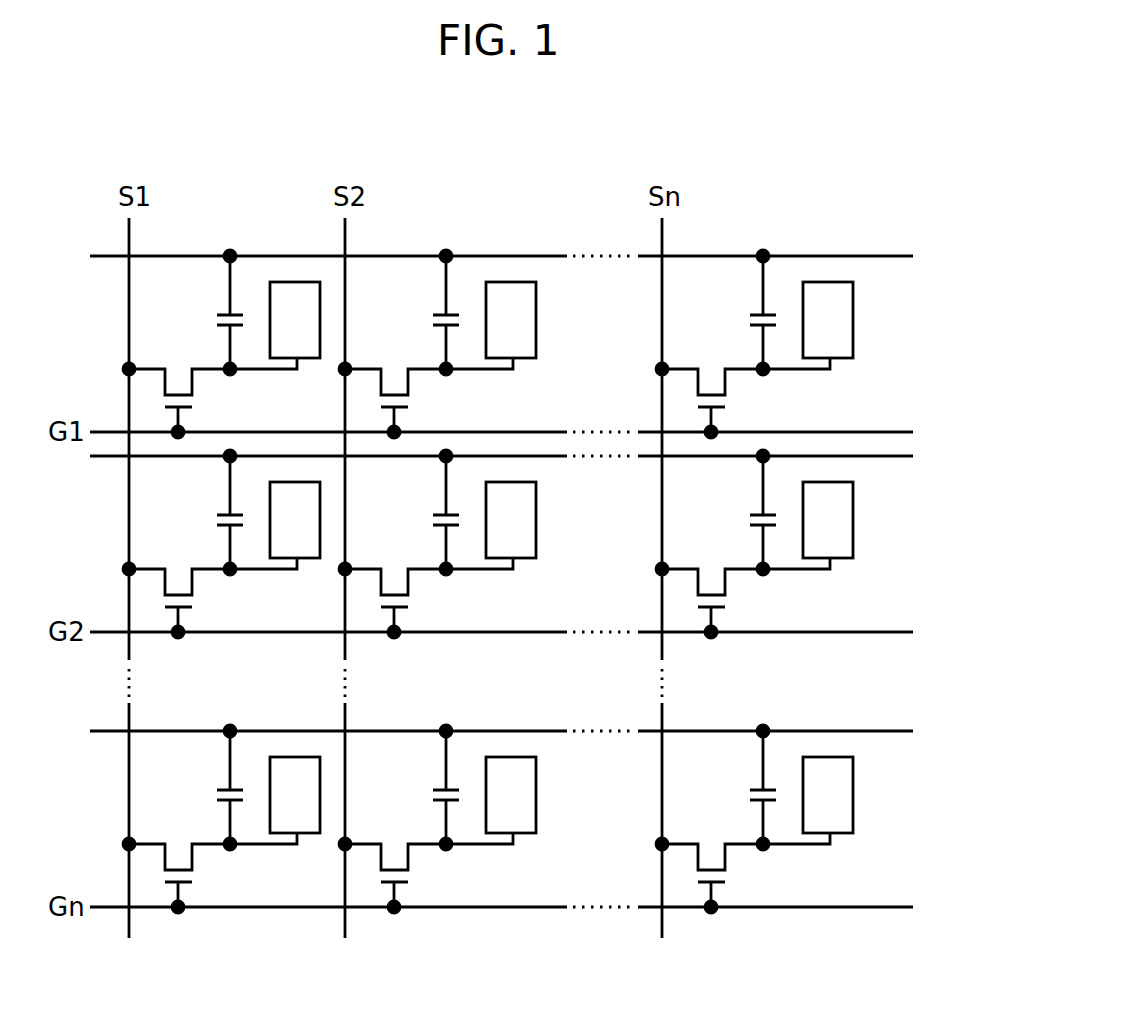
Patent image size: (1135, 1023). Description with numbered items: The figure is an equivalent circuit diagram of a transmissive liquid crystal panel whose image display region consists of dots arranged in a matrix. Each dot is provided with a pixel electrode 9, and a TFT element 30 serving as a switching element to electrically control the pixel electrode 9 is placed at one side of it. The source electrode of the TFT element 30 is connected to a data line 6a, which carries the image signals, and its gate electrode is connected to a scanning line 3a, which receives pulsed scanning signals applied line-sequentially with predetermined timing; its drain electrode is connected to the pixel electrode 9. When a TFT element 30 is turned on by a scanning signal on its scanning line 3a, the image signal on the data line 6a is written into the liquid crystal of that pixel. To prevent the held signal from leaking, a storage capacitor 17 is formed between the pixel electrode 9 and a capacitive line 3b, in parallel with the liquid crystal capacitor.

The scanning line 3a is at (112, 431).
The capacitive line 3b is at (103, 255).
The data line 6a is at (133, 232).
The pixel electrode 9 is at (285, 281).
The storage capacitor 17 is at (208, 312).
The TFT element 30 is at (202, 405).